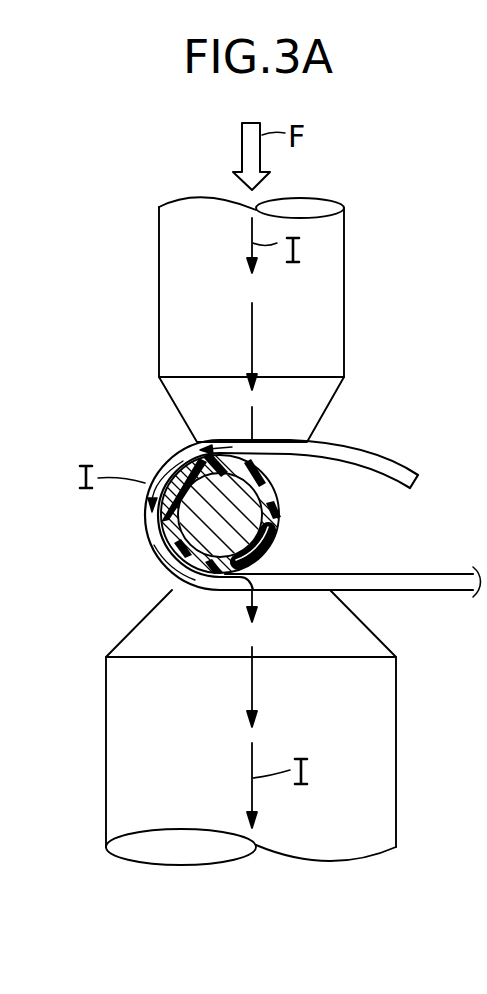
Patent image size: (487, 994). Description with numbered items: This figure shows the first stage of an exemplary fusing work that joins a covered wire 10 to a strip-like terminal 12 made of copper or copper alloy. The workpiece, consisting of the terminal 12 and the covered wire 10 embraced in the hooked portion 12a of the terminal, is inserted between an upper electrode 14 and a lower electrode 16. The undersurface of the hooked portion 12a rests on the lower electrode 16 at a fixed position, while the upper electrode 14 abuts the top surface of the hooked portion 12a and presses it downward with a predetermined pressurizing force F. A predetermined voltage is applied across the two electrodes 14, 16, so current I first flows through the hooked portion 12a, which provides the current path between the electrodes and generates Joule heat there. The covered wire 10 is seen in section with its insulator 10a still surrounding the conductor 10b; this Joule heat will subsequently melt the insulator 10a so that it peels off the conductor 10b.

The covered wire 10 is at (276, 525).
The insulator 10a is at (268, 525).
The conductor 10b is at (236, 507).
The terminal 12 is at (280, 491).
The hooked portion 12a is at (160, 468).
The upper electrode 14 is at (335, 267).
The lower electrode 16 is at (370, 730).